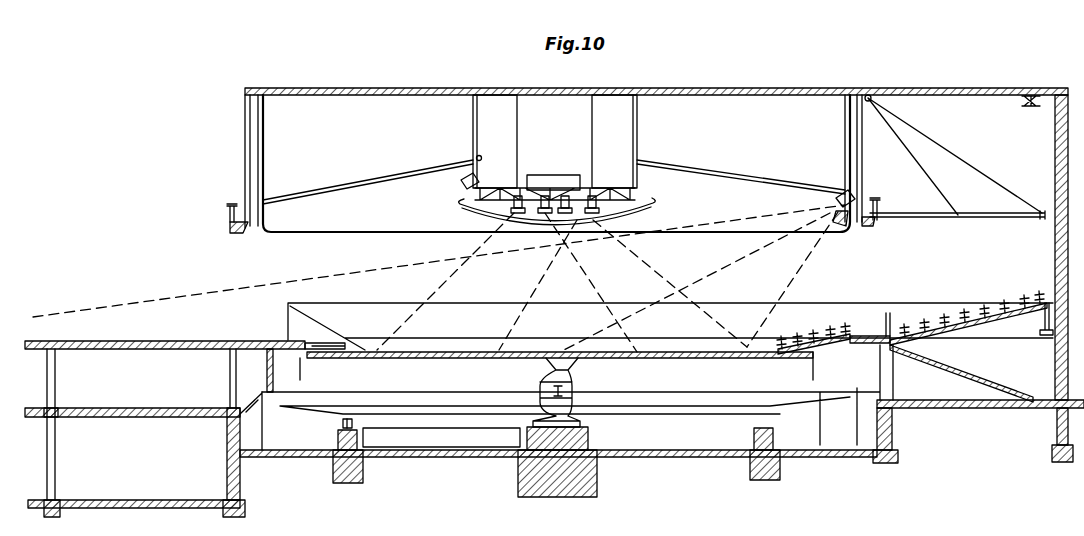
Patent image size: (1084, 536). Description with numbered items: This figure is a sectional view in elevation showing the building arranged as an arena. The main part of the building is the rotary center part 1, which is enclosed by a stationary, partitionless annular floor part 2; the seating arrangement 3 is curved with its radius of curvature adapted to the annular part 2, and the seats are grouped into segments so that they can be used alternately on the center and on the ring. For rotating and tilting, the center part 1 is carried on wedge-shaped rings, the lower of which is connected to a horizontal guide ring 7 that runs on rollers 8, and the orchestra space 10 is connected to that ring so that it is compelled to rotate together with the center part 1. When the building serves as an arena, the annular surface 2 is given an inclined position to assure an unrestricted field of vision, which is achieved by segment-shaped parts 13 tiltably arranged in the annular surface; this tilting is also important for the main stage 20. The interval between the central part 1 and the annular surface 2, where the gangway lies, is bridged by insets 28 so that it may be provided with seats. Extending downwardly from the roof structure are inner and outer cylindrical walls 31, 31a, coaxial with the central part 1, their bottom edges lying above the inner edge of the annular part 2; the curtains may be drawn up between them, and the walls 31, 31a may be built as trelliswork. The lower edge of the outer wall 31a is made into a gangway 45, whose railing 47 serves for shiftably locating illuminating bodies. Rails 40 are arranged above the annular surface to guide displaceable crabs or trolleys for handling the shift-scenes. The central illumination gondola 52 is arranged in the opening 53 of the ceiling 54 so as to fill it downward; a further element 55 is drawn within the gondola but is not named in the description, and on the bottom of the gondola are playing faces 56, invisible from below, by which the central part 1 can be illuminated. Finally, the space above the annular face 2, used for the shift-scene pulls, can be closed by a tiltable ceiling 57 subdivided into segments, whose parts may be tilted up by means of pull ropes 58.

The center part 1 is at (658, 352).
The annular floor part 2 is at (866, 336).
The seating arrangement 3 is at (970, 297).
The horizontal guide ring 7 is at (396, 447).
The rollers 8 is at (342, 424).
The orchestra space 10 is at (279, 348).
The segment-shaped parts 13 is at (1007, 312).
The main stage 20 is at (210, 330).
The insets 28 is at (818, 348).
The inner cylindrical wall 31 is at (258, 134).
The outer cylindrical wall 31a is at (247, 154).
The rails 40 is at (1031, 107).
The gangway 45 is at (233, 230).
The railing 47 is at (228, 214).
The central illumination gondola 52 is at (649, 203).
The opening 53 is at (478, 156).
The ceiling 54 is at (347, 182).
The lamp housing 55 is at (548, 178).
The playing faces 56 is at (545, 220).
The tiltable ceiling 57 is at (927, 218).
The pull ropes 58 is at (933, 176).